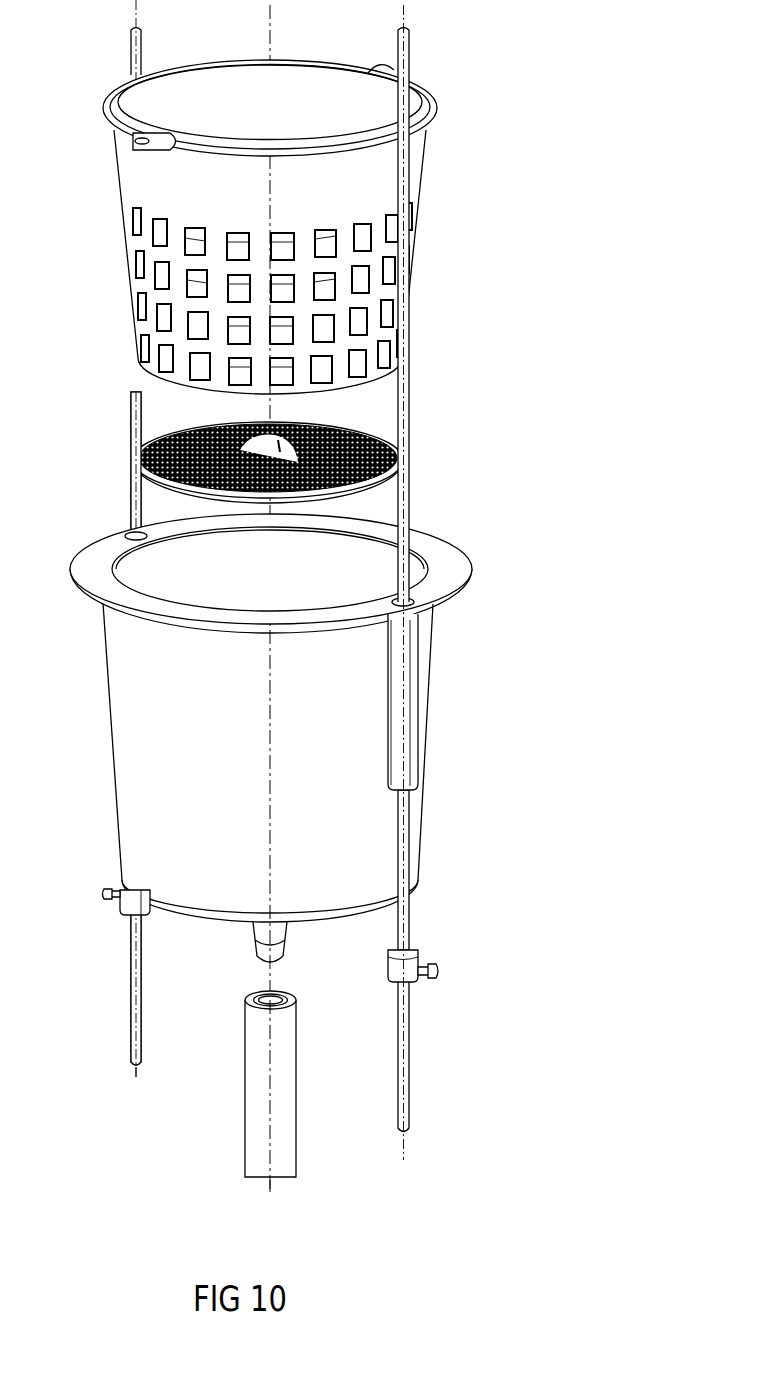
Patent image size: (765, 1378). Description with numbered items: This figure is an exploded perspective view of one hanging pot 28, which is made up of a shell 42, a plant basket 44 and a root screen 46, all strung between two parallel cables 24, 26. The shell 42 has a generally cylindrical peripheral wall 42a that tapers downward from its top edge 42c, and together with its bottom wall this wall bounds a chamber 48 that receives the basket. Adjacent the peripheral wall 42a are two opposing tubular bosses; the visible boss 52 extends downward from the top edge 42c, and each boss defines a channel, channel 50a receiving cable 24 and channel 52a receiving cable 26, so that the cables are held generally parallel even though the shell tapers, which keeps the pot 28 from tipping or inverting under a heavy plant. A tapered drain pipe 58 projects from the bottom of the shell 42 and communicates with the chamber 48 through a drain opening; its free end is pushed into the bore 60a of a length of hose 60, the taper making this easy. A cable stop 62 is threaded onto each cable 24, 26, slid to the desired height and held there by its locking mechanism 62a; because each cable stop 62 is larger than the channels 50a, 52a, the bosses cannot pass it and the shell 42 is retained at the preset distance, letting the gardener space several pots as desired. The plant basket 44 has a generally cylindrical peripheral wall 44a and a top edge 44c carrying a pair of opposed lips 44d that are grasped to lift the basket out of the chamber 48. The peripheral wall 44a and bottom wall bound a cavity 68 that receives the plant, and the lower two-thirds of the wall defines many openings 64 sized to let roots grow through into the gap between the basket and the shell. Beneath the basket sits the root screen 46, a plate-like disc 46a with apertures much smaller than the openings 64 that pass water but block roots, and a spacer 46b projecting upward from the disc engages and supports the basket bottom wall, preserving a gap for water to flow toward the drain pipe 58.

The cable 24 is at (132, 1015).
The cable 26 is at (405, 1043).
The pot 28 is at (539, 631).
The shell 42 is at (257, 729).
The peripheral wall 42a is at (235, 827).
The top edge 42c is at (222, 615).
The plant basket 44 is at (276, 207).
The peripheral wall 44a is at (376, 198).
The top edge 44c is at (173, 68).
The lips 44d is at (123, 133).
The root screen 46 is at (274, 446).
The plate-like disc 46a is at (362, 433).
The spacer 46b is at (298, 422).
The chamber 48 is at (171, 585).
The channel 50a is at (130, 533).
The boss 52 is at (410, 680).
The channel 52a is at (415, 597).
The drain pipe 58 is at (258, 932).
The hose 60 is at (271, 1076).
The bore 60a is at (273, 1002).
The cable stop 62 is at (120, 905).
The locking mechanism 62a is at (102, 892).
The openings 64 is at (279, 243).
The cavity 68 is at (360, 108).